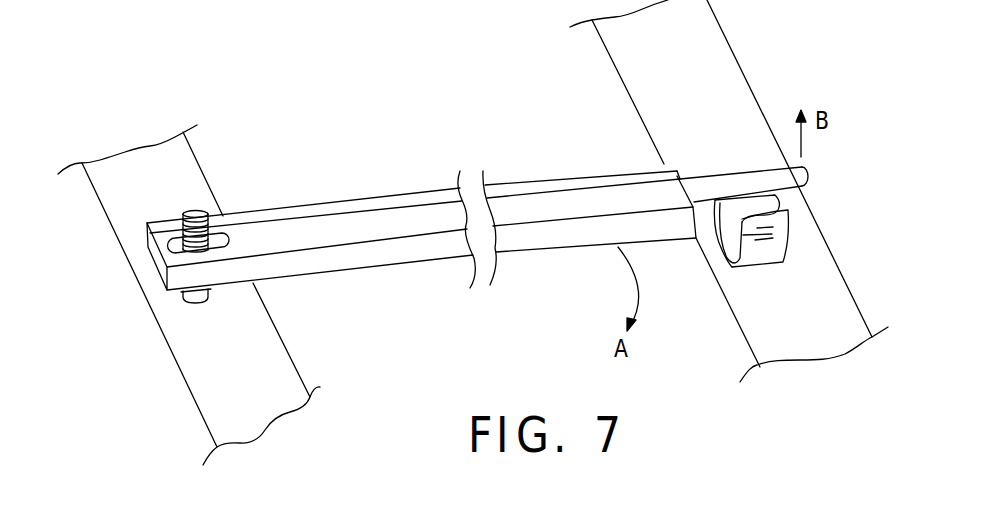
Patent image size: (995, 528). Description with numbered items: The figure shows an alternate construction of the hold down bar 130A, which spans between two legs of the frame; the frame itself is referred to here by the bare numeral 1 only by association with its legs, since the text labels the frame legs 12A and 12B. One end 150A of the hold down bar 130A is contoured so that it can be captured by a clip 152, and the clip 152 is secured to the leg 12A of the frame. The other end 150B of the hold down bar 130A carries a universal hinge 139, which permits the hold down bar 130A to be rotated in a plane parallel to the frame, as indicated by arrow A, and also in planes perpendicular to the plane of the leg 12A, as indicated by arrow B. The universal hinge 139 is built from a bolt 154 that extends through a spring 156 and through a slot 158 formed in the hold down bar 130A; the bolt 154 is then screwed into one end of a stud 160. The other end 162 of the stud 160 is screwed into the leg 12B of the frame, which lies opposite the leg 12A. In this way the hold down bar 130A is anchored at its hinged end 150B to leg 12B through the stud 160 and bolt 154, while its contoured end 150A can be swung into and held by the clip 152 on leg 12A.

The assembly 1 is at (568, 198).
The leg 12A is at (690, 63).
The leg 12B is at (252, 280).
The hold down bar 130A is at (380, 232).
The universal hinge 139 is at (185, 258).
The end 150A is at (753, 176).
The other end 150B is at (229, 201).
The clip 152 is at (775, 250).
The bolt 154 is at (192, 210).
The spring 156 is at (150, 240).
The slot 158 is at (226, 246).
The stud 160 is at (187, 297).
The other end 162 is at (197, 303).